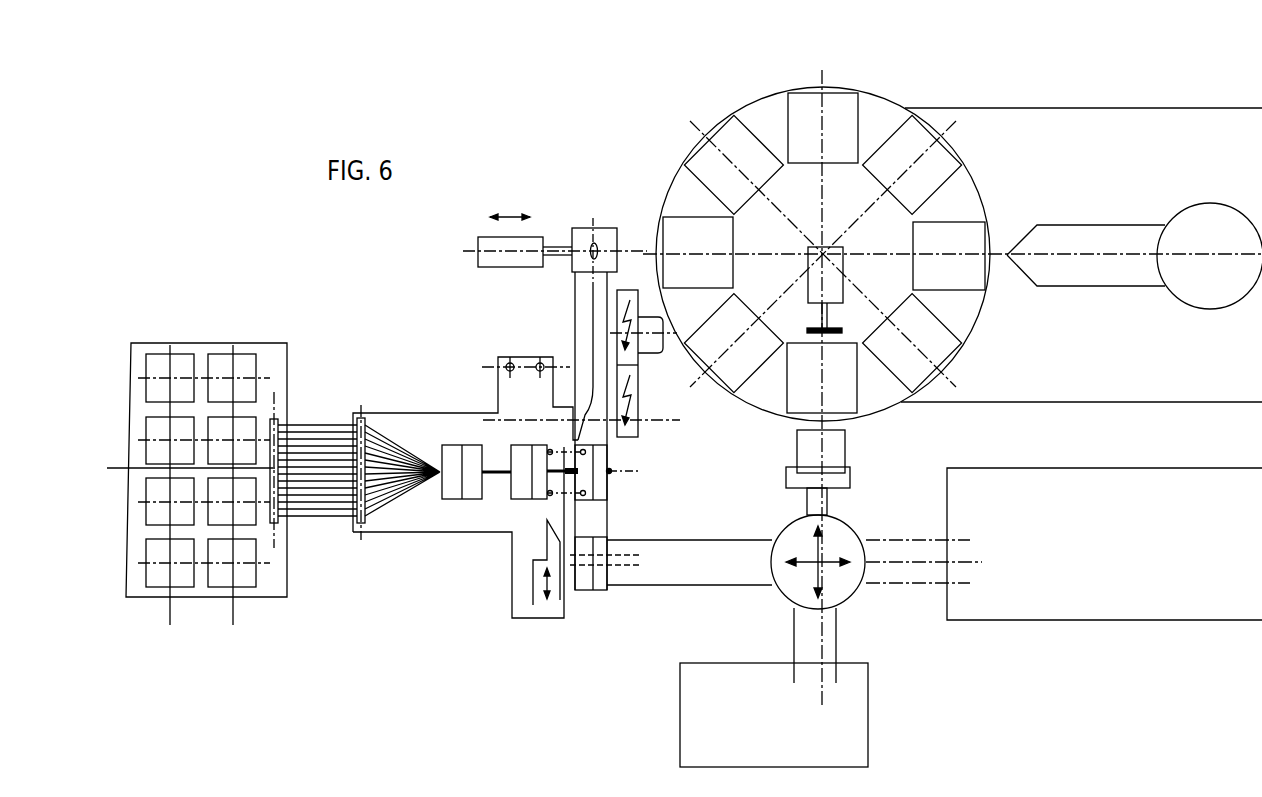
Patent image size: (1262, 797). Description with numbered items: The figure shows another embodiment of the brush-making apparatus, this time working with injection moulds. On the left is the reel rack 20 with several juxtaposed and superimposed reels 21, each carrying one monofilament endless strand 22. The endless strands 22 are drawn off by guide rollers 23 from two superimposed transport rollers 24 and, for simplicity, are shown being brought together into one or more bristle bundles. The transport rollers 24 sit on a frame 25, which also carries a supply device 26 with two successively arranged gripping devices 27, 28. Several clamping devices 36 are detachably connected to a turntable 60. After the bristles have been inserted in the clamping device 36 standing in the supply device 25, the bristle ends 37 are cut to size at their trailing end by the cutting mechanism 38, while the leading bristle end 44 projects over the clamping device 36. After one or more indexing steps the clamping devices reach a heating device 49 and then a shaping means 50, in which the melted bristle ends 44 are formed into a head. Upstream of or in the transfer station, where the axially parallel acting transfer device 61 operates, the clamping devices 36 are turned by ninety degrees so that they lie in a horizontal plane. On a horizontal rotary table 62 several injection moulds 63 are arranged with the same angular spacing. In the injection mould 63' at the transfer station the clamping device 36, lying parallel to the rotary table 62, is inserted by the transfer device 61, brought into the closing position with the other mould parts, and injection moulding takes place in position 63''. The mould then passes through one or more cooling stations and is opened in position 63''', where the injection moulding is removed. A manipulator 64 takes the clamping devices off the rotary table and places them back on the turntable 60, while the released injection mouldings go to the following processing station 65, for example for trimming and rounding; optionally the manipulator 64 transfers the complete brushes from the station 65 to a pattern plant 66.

The reel rack 20 is at (263, 596).
The reels 21 is at (227, 363).
The monofilament endless strand 22 is at (300, 420).
The guide rollers 23 is at (282, 522).
The transport rollers 24 is at (363, 420).
The frame 25 is at (407, 522).
The supply device 26 is at (468, 430).
The gripping device 27 is at (447, 500).
The gripping device 28 is at (518, 490).
The clamping device 36 is at (603, 228).
The bristle ends 37 is at (567, 470).
The cutting mechanism 38 is at (540, 596).
The leading bristle end 44 is at (600, 248).
The heating device 49 is at (632, 380).
The shaping means 50 is at (655, 350).
The turntable 60 is at (580, 320).
The transfer device 61 is at (529, 241).
The rotary table 62 is at (900, 89).
The injection moulds 63 is at (829, 208).
The injection mould at transfer station 63' is at (672, 221).
The injection moulding position 63'' is at (981, 233).
The opening position 63''' is at (857, 400).
The manipulator 64 is at (790, 582).
The processing station 65 is at (962, 600).
The pattern plant 66 is at (850, 735).